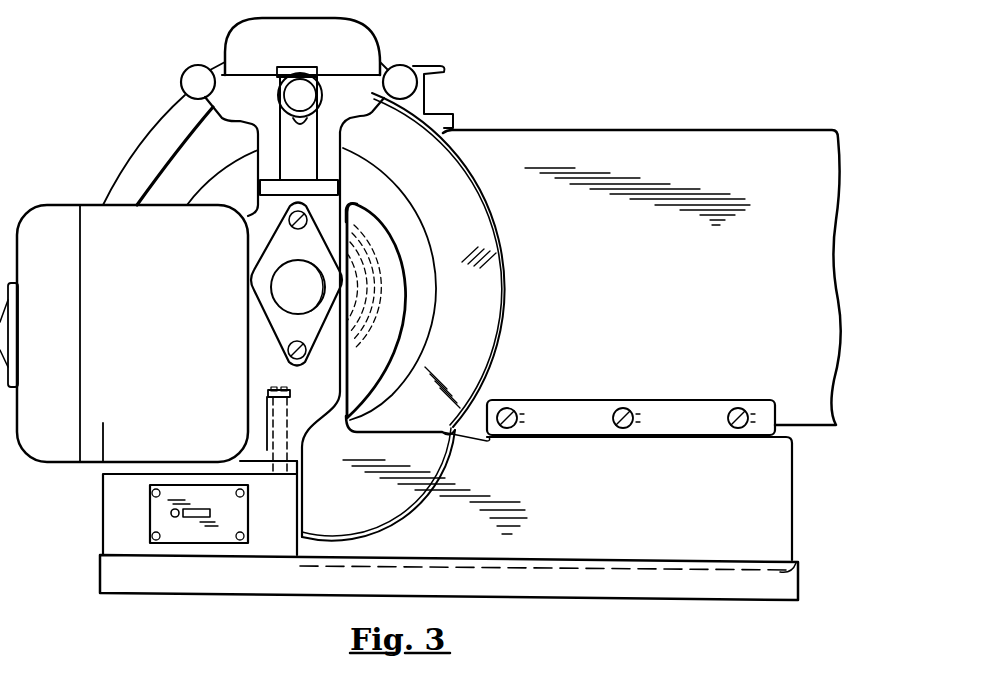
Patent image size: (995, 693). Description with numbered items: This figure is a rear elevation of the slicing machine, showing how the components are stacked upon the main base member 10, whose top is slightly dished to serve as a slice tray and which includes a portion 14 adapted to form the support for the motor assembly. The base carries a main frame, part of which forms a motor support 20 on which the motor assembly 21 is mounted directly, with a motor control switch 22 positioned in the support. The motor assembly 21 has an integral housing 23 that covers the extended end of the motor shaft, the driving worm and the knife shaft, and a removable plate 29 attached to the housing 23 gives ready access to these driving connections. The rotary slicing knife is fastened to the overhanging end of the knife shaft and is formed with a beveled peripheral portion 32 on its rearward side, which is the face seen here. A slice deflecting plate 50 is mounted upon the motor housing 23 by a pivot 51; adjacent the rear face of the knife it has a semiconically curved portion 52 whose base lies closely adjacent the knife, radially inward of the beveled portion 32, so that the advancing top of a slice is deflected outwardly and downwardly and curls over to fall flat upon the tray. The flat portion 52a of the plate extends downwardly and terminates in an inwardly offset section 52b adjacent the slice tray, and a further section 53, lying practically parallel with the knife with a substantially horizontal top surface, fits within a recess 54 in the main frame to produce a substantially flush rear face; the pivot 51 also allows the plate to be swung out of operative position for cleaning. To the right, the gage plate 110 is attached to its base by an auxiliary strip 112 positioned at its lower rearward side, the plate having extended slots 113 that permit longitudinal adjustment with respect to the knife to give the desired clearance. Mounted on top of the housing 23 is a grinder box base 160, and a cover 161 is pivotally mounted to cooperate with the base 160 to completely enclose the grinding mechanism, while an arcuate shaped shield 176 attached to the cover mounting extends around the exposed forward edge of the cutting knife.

The main base member 10 is at (799, 562).
The portion of the base 14 is at (133, 560).
The motor support 20 is at (120, 520).
The motor assembly 21 is at (88, 448).
The motor control switch 22 is at (173, 513).
The housing 23 is at (262, 220).
The removable plate 29 is at (265, 272).
The beveled peripheral portion 32 is at (475, 343).
The slice deflecting plate 50 is at (313, 403).
The pivot 51 is at (270, 392).
The semiconically curved portion 52 is at (398, 293).
The flat portion 52a is at (347, 220).
The inwardly offset section 52b is at (303, 493).
The section 53 is at (428, 463).
The recess 54 is at (460, 450).
The gage plate 110 is at (768, 142).
The auxiliary strip 112 is at (677, 427).
The extended slots 113 is at (514, 416).
The grinder box base 160 is at (258, 152).
The cover 161 is at (355, 43).
The arcuate shaped shield 176 is at (115, 188).